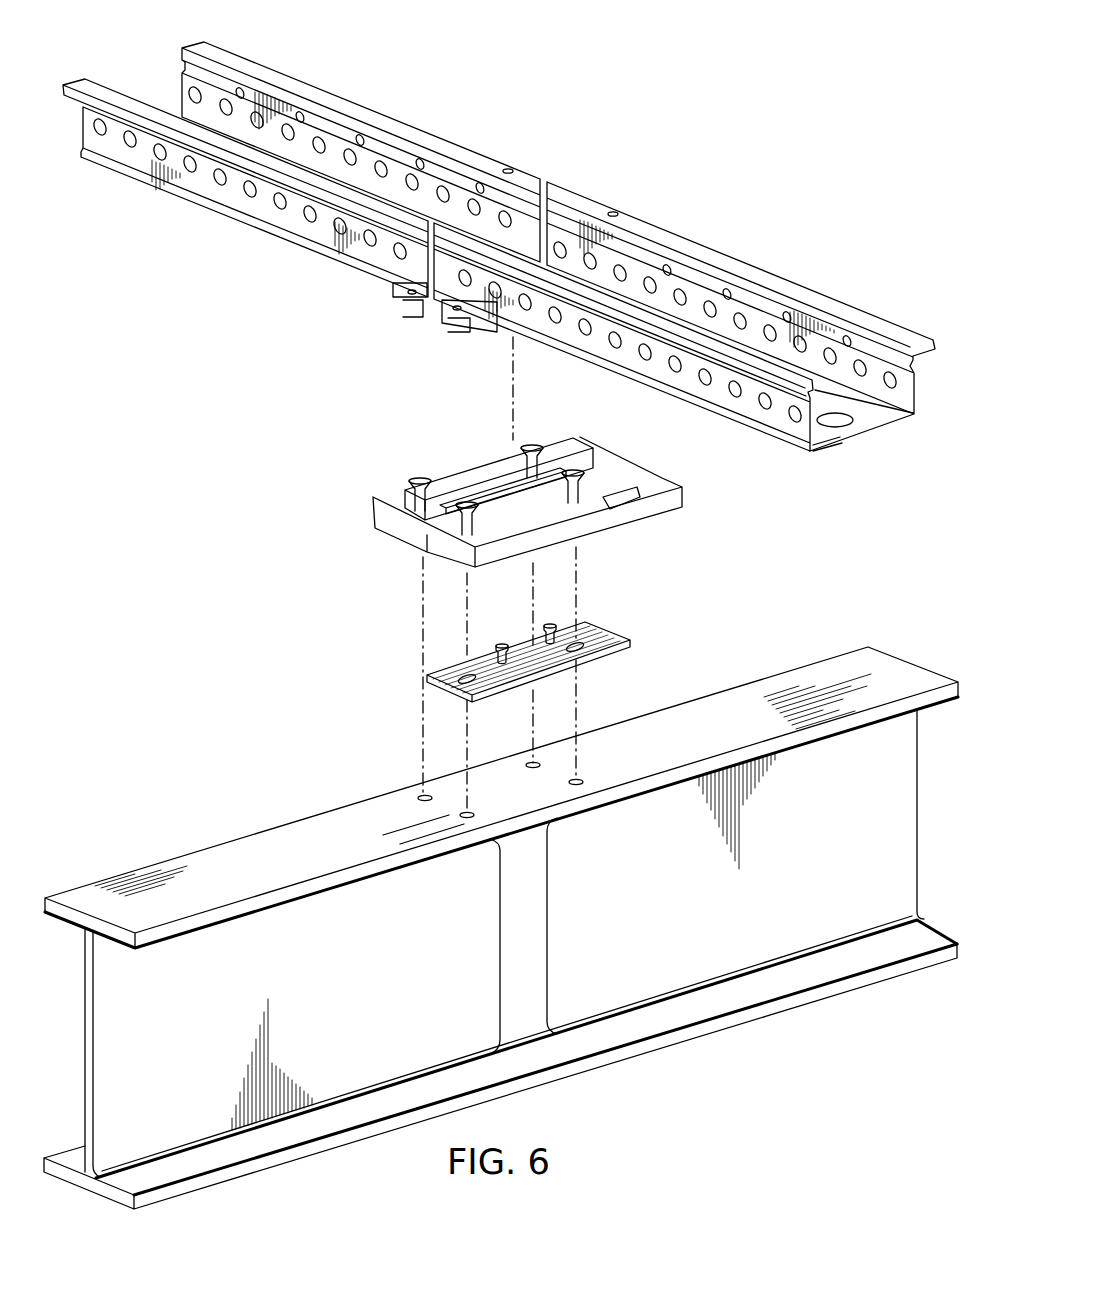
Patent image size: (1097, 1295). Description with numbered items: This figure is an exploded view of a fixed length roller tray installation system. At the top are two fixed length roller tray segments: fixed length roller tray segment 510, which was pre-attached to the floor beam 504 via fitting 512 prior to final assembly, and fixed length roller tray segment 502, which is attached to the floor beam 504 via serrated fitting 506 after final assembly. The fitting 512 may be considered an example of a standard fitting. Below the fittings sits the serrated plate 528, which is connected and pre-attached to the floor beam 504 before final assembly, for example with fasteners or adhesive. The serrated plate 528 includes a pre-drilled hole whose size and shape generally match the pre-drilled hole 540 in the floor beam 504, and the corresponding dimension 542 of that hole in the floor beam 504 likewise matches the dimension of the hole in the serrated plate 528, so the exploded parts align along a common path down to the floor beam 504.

The fixed length roller tray segment 502 is at (763, 280).
The fixed length roller tray segment 510 is at (350, 104).
The fitting 512 is at (472, 473).
The serrated fitting 506 is at (657, 510).
The serrated plate 528 is at (596, 634).
The floor beam 504 is at (216, 852).
The pre-drilled hole 540 is at (470, 813).
The dimension 542 is at (466, 859).